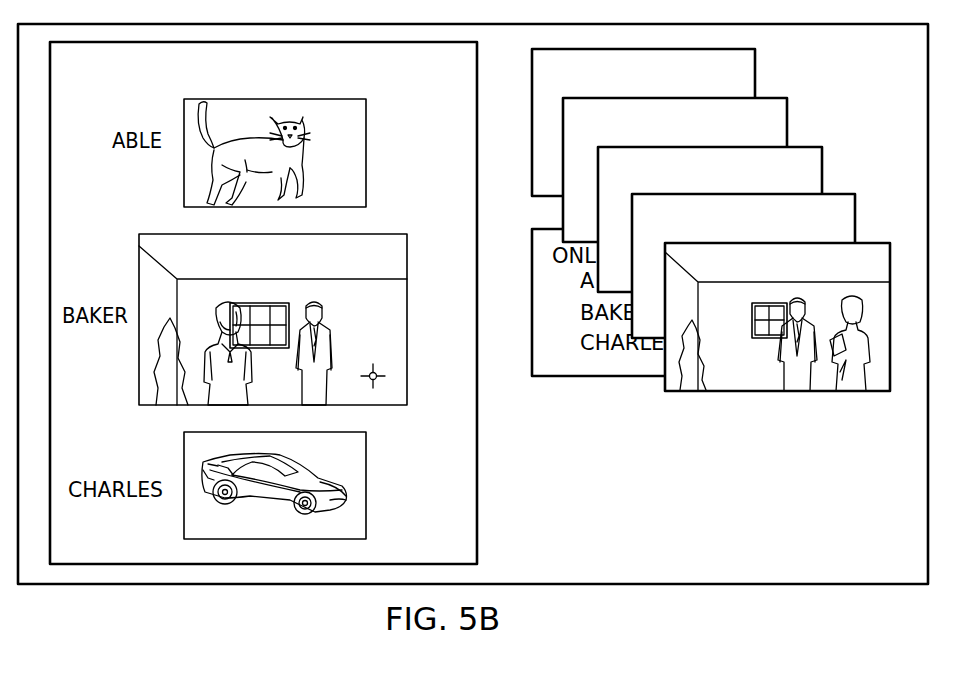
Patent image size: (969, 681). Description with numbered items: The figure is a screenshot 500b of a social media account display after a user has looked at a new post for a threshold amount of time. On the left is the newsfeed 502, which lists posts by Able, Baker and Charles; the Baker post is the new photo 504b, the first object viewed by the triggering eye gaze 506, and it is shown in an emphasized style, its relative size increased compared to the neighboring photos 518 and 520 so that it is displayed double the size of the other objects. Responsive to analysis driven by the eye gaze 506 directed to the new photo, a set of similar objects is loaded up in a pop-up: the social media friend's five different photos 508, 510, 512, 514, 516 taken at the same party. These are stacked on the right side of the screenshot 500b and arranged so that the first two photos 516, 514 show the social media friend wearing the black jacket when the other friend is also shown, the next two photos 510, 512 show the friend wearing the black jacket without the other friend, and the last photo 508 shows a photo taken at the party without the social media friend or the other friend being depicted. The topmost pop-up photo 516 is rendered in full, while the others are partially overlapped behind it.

The screenshot 500b is at (795, 584).
The newsfeed 502 is at (250, 82).
The photo 504b is at (407, 322).
The eye gaze 506 is at (377, 380).
The photo 508 is at (755, 58).
The photo 510 is at (787, 105).
The photo 512 is at (822, 156).
The photo 514 is at (855, 219).
The photo 516 is at (693, 391).
The photo 518 is at (366, 125).
The photo 520 is at (366, 472).